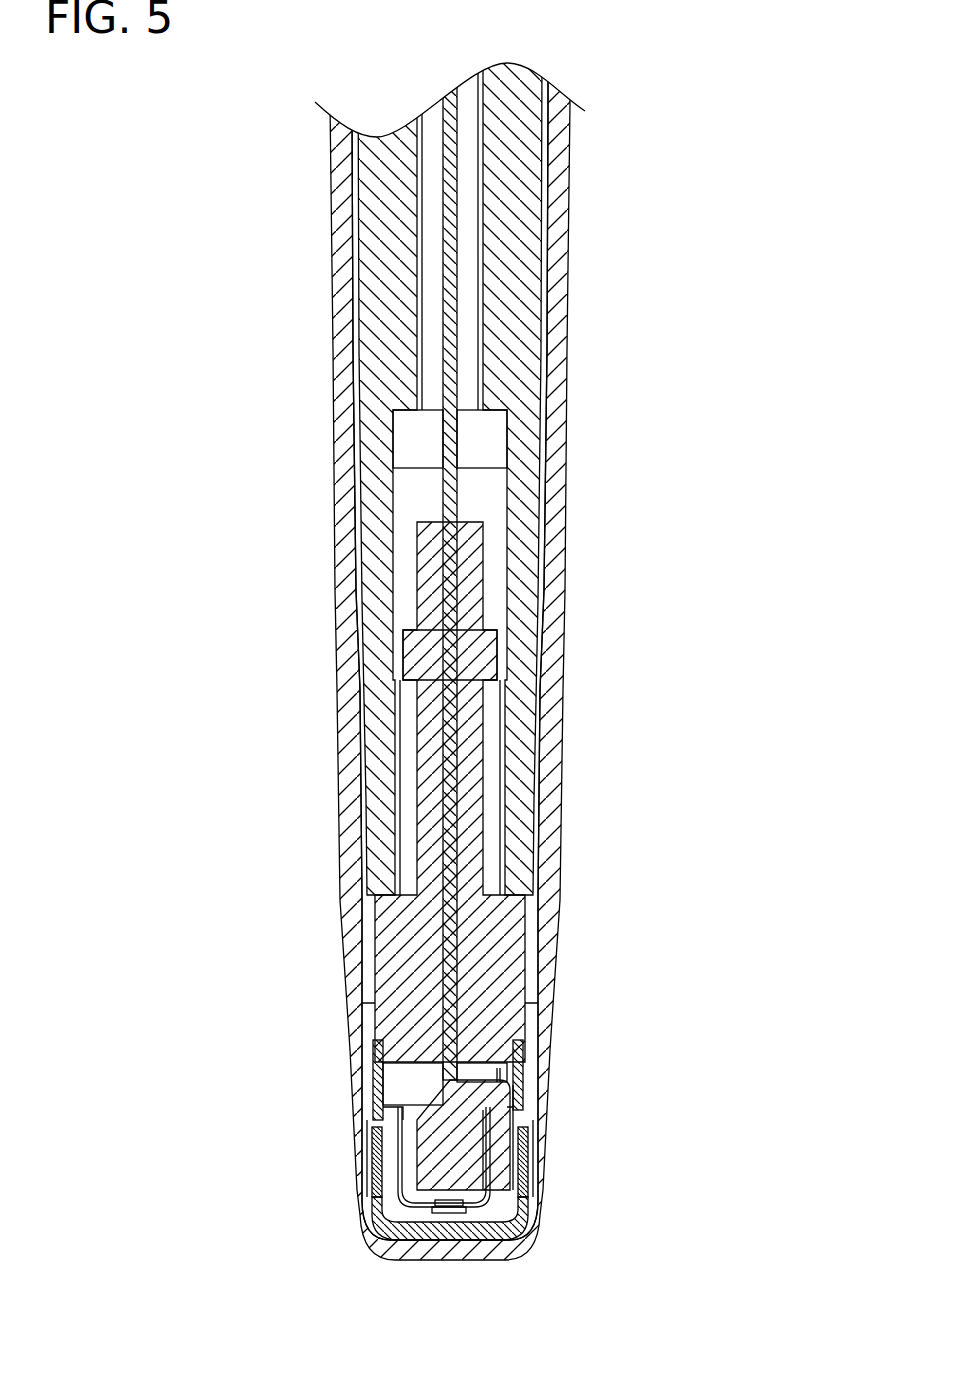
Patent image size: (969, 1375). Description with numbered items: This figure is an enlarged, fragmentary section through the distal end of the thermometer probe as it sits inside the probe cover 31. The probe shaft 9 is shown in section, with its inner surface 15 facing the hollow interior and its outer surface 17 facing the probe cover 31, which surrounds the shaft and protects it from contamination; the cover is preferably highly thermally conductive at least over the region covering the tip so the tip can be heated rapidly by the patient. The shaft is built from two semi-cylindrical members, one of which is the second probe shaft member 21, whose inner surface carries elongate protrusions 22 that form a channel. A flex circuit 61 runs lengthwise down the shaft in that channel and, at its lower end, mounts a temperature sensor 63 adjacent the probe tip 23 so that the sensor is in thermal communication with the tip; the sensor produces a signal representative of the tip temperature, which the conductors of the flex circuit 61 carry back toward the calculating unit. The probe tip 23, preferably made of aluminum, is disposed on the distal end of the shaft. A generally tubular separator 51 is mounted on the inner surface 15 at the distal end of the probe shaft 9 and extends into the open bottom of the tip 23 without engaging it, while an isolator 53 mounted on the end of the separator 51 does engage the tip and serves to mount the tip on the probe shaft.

The probe shaft 9 is at (440, 570).
The inner surface 15 is at (373, 864).
The outer surface 17 is at (540, 574).
The second probe shaft member 21 is at (382, 237).
The elongate protrusions 22 is at (465, 192).
The probe tip 23 is at (367, 1225).
The probe cover 31 is at (566, 713).
The separator 51 is at (417, 655).
The isolator 53 is at (380, 1082).
The flex circuit 61 is at (450, 264).
The temperature sensor 63 is at (458, 1213).